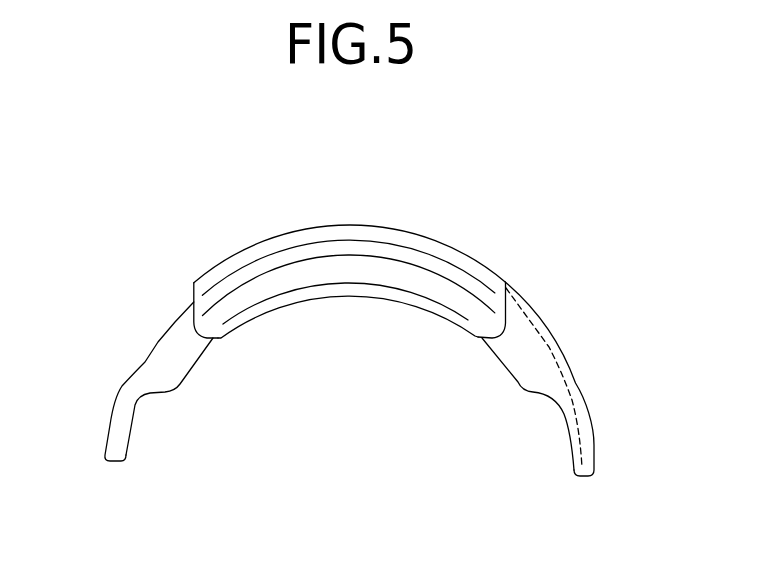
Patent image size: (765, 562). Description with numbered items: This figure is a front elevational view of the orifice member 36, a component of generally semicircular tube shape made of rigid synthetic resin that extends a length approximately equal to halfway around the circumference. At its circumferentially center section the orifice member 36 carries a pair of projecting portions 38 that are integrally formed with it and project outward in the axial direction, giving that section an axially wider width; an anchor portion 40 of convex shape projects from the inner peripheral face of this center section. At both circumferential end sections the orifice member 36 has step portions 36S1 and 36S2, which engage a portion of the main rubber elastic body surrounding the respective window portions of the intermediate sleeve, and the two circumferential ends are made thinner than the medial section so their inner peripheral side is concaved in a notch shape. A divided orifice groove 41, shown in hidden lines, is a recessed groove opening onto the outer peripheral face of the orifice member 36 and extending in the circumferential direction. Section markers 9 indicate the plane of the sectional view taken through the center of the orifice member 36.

The section line 9- 9 is at (324, 182).
The orifice member 36 is at (531, 242).
The step portion 36S1 is at (131, 403).
The step portion 36S2 is at (563, 416).
The projecting portion 38 is at (238, 278).
The anchor portion 40 is at (245, 317).
The divided orifice groove 41 is at (549, 347).